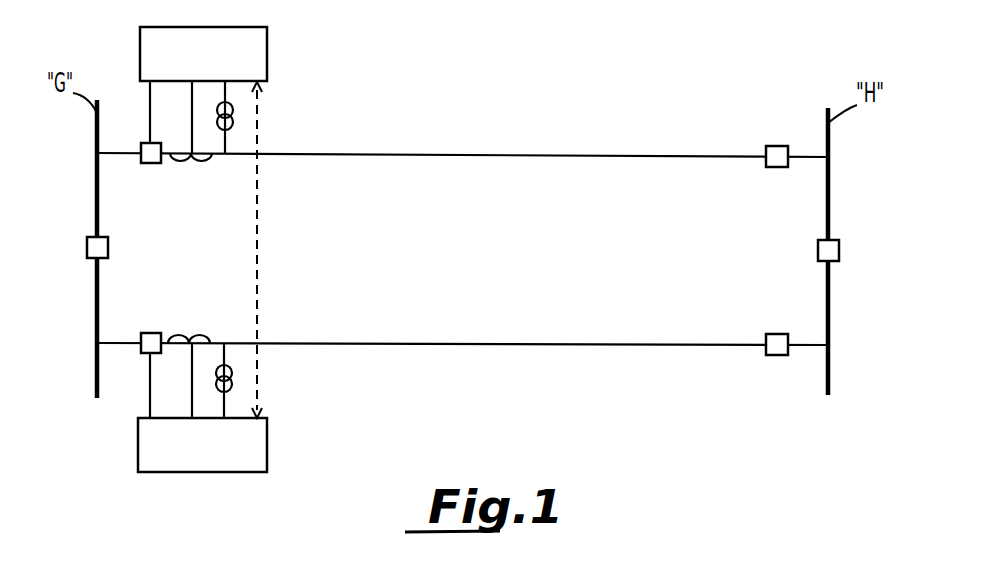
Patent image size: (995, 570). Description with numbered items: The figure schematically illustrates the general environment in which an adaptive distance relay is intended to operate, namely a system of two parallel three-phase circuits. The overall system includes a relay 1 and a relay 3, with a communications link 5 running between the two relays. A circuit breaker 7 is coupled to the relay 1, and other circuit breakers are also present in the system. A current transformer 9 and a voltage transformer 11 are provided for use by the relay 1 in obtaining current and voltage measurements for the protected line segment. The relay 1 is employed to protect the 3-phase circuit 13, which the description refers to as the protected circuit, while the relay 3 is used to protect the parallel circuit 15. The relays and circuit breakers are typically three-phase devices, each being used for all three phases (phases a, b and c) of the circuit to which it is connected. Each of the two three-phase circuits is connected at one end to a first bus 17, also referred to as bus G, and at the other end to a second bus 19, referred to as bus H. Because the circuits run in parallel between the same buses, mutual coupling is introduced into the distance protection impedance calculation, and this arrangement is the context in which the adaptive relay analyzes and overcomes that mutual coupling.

The relay 1 is at (258, 452).
The relay 3 is at (260, 52).
The communications link 5 is at (257, 243).
The circuit breaker 7 is at (152, 327).
The current transformer 9 is at (182, 333).
The voltage transformer 11 is at (232, 383).
The 3-phase circuit 13 is at (630, 343).
The parallel circuit 15 is at (657, 156).
The first bus 17 is at (97, 210).
The second bus 19 is at (828, 203).